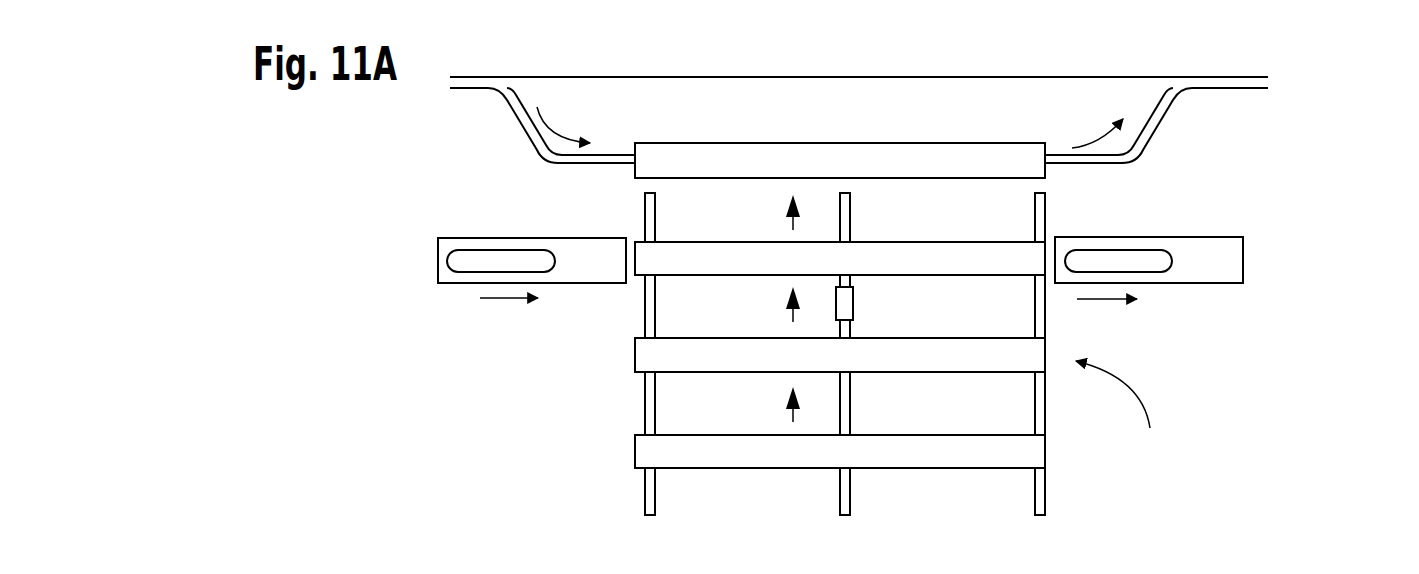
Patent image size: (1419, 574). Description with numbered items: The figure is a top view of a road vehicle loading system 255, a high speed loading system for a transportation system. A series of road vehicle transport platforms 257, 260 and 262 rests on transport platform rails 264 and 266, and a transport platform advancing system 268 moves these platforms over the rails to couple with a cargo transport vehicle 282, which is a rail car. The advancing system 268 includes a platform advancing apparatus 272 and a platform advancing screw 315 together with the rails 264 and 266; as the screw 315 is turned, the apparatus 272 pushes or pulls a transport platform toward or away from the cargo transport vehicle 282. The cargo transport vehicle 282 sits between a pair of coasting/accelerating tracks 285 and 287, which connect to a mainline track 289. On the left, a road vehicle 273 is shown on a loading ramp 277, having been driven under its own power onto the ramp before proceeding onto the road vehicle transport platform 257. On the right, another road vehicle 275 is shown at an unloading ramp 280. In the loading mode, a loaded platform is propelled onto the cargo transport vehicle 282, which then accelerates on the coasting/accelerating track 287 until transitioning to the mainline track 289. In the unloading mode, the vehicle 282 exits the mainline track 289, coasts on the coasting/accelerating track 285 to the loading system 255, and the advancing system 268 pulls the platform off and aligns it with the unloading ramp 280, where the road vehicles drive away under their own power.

The road vehicle loading system 255 is at (1122, 409).
The road vehicle transport platform 257 is at (750, 268).
The road vehicle transport platform 260 is at (756, 364).
The road vehicle transport platform 262 is at (756, 460).
The transport platform rail 264 is at (645, 489).
The transport platform rail 266 is at (1045, 497).
The transport platform advancing system 268 is at (866, 322).
The platform advancing apparatus 272 is at (855, 299).
The road vehicle 273 is at (537, 257).
The road vehicle 275 is at (1110, 258).
The loading ramp 277 is at (588, 279).
The unloading ramp 280 is at (1210, 274).
The cargo transport vehicle 282 is at (758, 180).
The coasting/accelerating track 285 is at (536, 146).
The coasting/accelerating track 287 is at (1147, 127).
The mainline track 289 is at (763, 90).
The platform advancing screw 315 is at (850, 412).